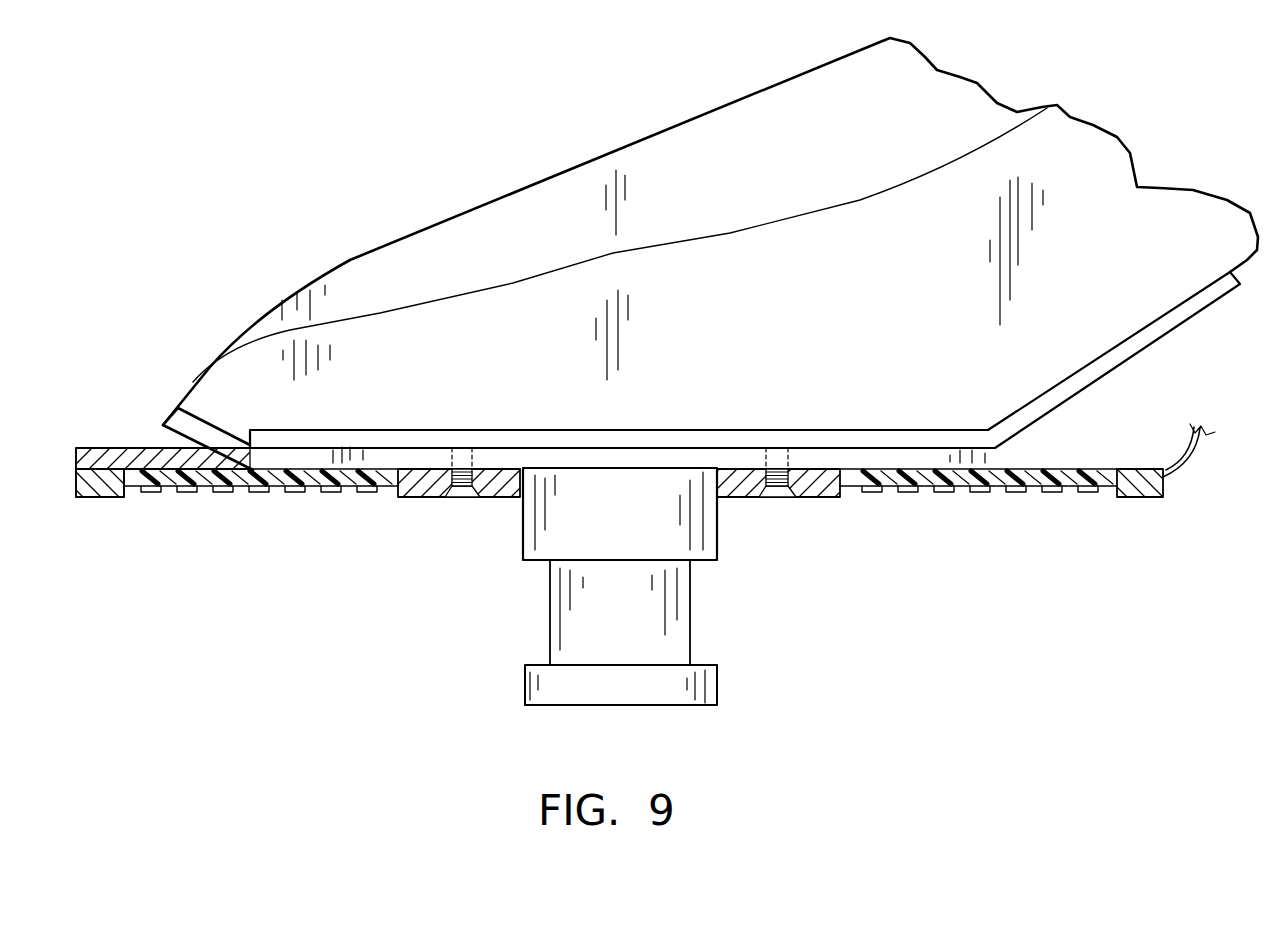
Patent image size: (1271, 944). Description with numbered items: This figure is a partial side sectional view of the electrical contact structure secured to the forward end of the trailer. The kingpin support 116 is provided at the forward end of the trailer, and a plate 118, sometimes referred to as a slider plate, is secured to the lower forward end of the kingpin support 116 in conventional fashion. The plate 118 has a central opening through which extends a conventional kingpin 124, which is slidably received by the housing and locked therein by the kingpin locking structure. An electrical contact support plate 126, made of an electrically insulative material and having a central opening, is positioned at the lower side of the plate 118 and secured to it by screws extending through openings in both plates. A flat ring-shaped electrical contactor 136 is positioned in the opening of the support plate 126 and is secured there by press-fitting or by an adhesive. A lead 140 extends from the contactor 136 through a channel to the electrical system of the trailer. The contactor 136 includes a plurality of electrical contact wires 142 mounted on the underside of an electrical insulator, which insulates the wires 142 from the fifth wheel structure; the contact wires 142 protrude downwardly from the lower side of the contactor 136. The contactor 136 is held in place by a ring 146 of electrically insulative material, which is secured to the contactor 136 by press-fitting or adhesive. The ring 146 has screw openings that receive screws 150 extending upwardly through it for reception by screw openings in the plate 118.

The kingpin support 116 is at (717, 110).
The plate 118 is at (207, 430).
The kingpin 124 is at (663, 623).
The electrical contact support plate 126 is at (112, 512).
The electrical contactor 136 is at (353, 480).
The lead 140 is at (1200, 428).
The electrical contact wires 142 is at (292, 487).
The ring 146 is at (505, 500).
The screws 150 is at (457, 493).